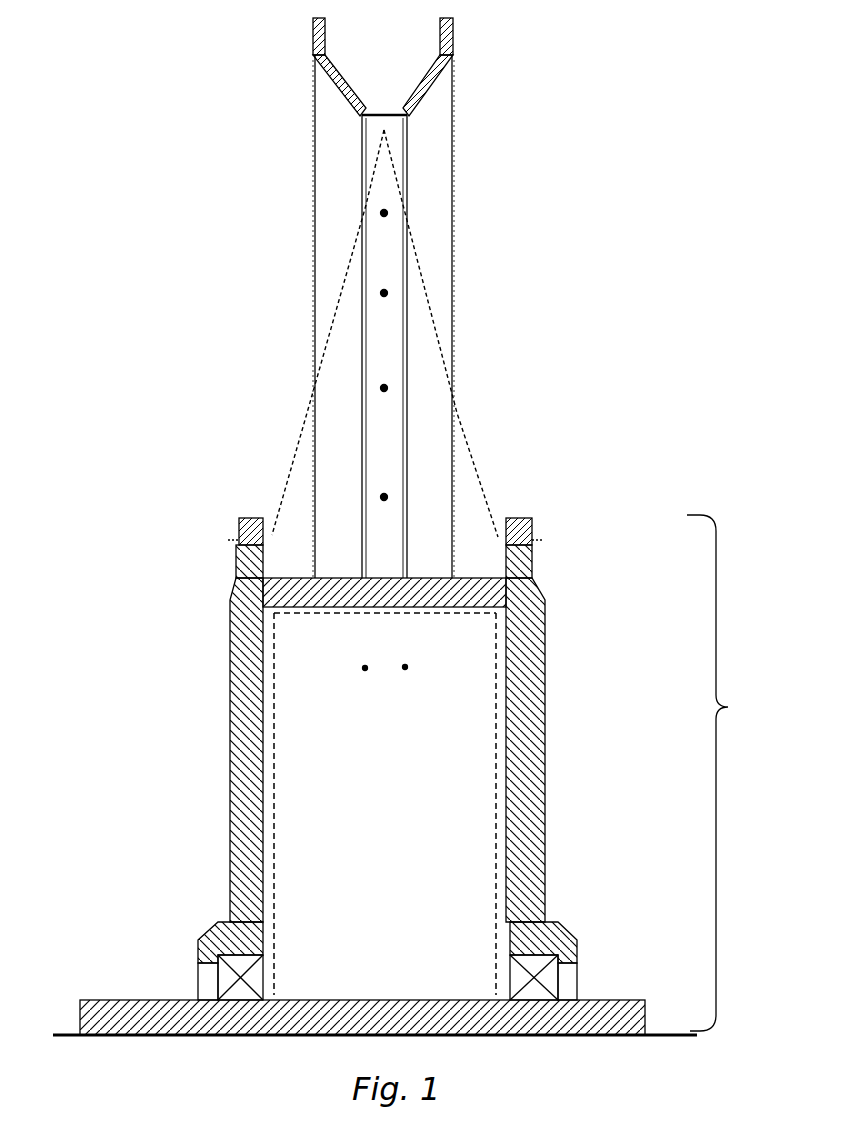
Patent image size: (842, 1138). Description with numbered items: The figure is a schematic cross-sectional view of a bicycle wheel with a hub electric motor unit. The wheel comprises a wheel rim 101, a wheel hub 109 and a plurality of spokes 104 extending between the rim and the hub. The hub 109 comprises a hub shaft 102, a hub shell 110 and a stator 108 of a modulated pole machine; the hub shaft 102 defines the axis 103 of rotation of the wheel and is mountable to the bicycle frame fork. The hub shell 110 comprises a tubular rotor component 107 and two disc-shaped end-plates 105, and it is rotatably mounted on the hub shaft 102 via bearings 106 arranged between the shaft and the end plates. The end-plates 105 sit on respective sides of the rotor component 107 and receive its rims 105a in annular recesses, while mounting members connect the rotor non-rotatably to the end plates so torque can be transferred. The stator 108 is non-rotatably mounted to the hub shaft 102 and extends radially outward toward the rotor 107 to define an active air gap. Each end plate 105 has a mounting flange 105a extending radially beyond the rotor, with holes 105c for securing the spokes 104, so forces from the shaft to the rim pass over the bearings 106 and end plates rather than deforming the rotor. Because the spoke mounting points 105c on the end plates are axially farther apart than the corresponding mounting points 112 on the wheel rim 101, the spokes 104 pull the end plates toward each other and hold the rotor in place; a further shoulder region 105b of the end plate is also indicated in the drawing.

The wheel rim 101 is at (440, 298).
The mounting points on the wheel rim 112 is at (387, 210).
The spokes 104 is at (389, 333).
The disc-shaped end-plates 105 is at (391, 750).
The mounting flange 105a is at (382, 546).
The housing wall shoulder 105b is at (391, 620).
The holes 105c is at (379, 502).
The bearings 106 is at (383, 936).
The tubular rotor component 107 is at (429, 514).
The stator 108 is at (308, 804).
The hub shaft 102 is at (340, 990).
The axis of rotation 103 is at (375, 1062).
The wheel hub 109 is at (748, 773).
The hub shell 110 is at (634, 756).